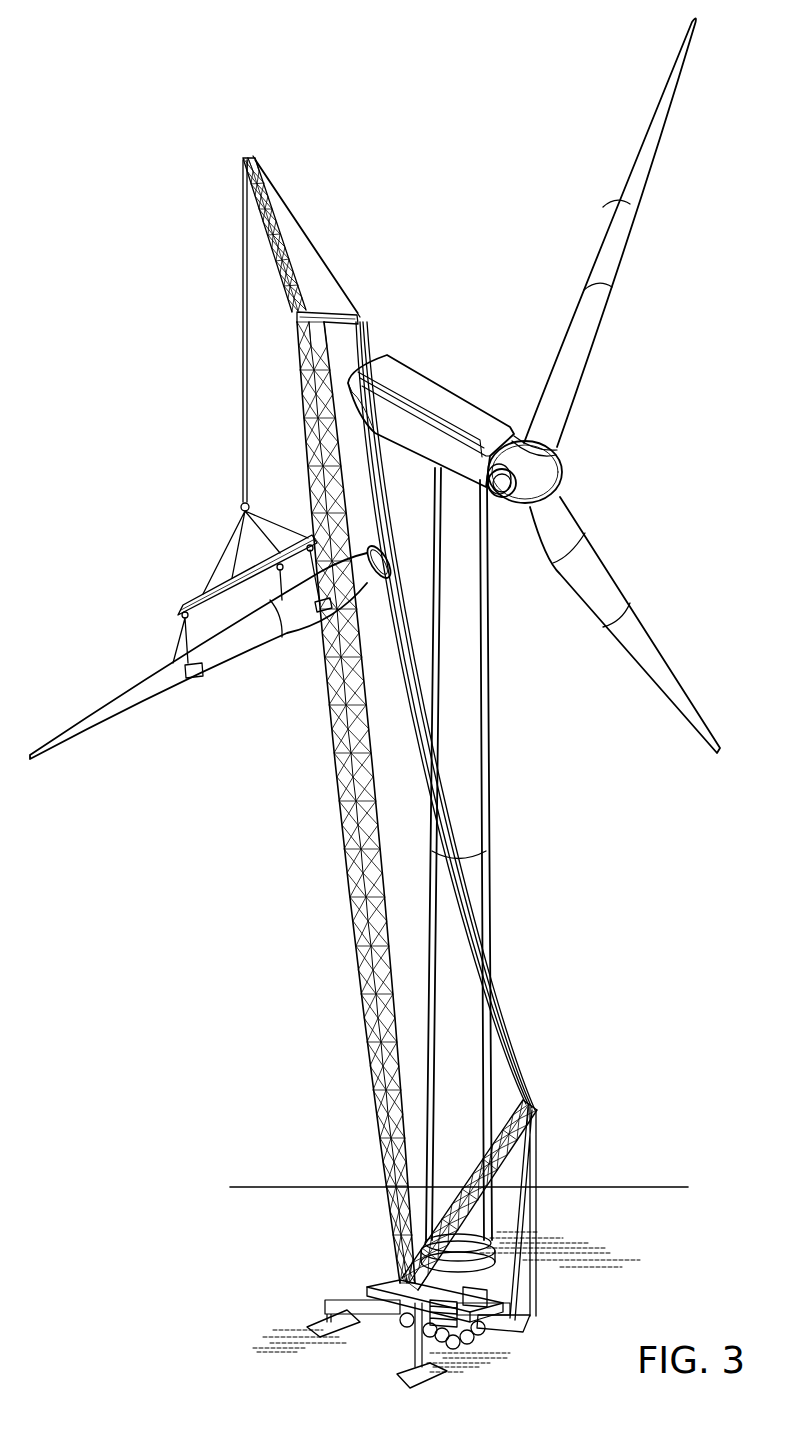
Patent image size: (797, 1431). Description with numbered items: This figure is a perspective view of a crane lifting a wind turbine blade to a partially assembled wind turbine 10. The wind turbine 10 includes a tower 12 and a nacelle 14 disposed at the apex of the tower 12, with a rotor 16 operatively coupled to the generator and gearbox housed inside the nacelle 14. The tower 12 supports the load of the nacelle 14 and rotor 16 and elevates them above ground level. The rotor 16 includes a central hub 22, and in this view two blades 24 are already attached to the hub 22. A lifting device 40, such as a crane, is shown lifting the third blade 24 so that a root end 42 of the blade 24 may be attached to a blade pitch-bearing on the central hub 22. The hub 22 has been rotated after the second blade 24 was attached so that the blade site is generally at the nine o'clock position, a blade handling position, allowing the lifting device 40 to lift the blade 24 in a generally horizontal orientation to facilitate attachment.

The wind turbine 10 is at (696, 460).
The tower 12 is at (487, 740).
The nacelle 14 is at (430, 375).
The rotor 16 is at (565, 484).
The central hub 22 is at (559, 466).
The blades 24 is at (603, 242).
The lifting device 40 is at (352, 985).
The root end 42 is at (391, 558).